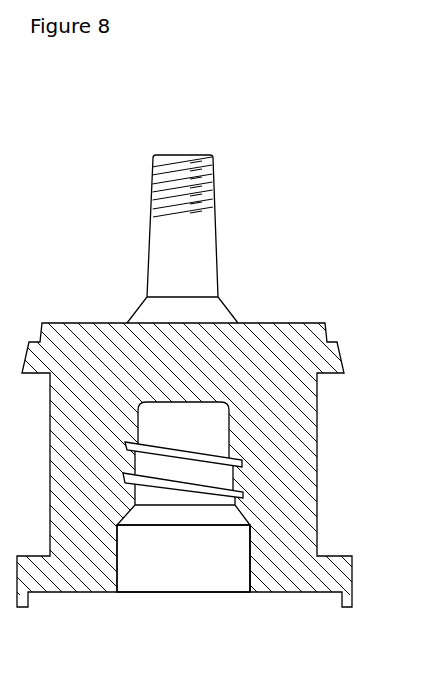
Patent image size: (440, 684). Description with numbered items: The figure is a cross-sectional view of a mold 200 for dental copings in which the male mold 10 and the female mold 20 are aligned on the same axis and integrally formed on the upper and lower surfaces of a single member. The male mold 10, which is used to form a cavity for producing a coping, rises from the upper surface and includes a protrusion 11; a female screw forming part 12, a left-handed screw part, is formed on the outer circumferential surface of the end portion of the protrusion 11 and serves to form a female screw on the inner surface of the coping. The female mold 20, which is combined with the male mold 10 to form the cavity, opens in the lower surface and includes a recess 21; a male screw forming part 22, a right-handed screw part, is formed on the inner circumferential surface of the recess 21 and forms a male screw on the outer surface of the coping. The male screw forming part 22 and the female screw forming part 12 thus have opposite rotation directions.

The mold 200 is at (220, 365).
The male mold 10 is at (237, 239).
The protrusion 11 is at (218, 260).
The female screw forming part 12 is at (213, 176).
The female mold 20 is at (185, 553).
The recess 21 is at (243, 555).
The male screw forming part 22 is at (228, 466).